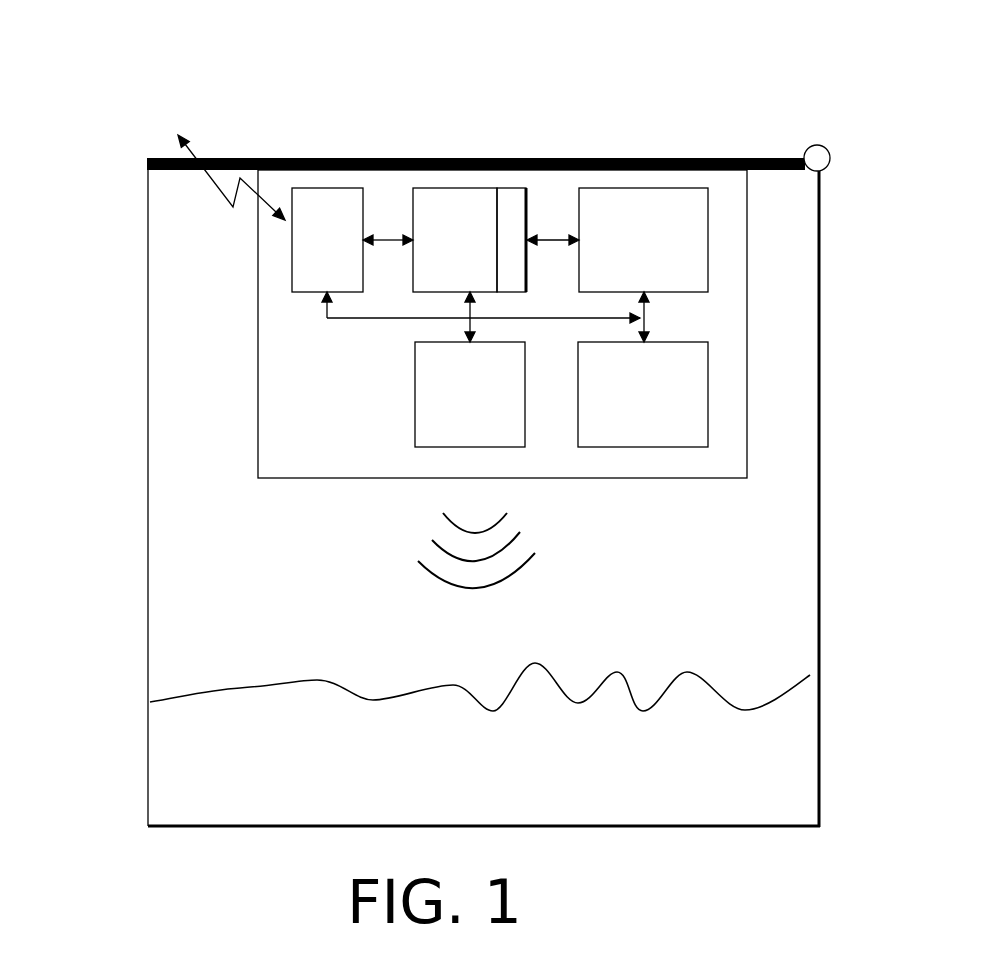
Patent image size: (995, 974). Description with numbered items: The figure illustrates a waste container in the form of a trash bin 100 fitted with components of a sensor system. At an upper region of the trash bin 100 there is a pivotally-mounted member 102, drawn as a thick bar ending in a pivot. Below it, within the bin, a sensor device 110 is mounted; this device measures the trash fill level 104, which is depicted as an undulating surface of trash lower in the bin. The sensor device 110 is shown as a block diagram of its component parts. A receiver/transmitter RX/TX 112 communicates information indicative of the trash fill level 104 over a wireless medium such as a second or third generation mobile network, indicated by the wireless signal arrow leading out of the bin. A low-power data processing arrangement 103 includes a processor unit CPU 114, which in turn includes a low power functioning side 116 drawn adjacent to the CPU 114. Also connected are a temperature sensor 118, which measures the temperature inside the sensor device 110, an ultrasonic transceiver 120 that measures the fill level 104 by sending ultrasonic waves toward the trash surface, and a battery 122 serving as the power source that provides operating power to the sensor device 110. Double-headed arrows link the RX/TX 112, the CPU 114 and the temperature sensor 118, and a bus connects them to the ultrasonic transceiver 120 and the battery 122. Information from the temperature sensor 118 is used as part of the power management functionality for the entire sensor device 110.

The trash bin 100 is at (435, 498).
The pivotally-mounted lid 102 is at (488, 102).
The low-power data processing arrangement 103 is at (205, 157).
The trash fill level 104 is at (430, 709).
The sensor device 110 is at (398, 335).
The receiver/transmitter RX/TX 112 is at (327, 240).
The processor unit CPU 114 is at (455, 240).
The low power functioning side 116 is at (517, 240).
The temperature sensor 118 is at (643, 240).
The ultrasonic transceiver 120 is at (470, 394).
The battery 122 is at (643, 394).